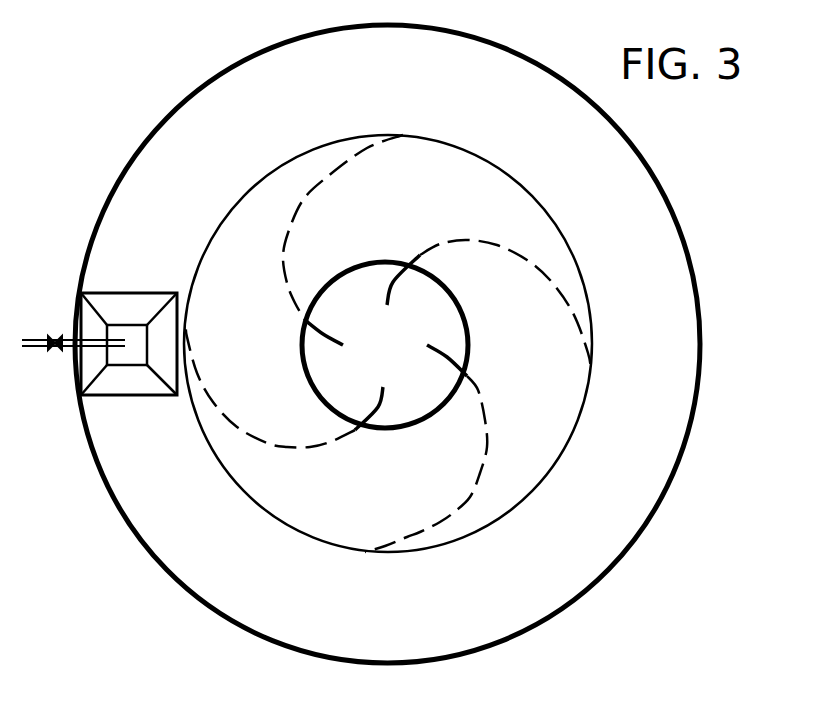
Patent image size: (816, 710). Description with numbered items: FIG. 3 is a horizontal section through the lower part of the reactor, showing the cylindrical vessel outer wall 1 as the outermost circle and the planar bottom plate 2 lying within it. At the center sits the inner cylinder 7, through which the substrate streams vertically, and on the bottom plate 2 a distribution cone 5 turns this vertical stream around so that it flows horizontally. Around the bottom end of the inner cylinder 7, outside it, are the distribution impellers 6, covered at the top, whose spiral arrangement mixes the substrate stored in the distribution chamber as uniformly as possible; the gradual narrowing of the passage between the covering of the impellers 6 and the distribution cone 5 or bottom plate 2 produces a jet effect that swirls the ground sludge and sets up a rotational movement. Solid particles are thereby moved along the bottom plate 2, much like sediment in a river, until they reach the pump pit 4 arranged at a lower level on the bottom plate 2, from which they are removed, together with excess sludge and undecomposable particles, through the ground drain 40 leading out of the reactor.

The cylindrical vessel outer wall 1 is at (100, 222).
The planar bottom plate 2 is at (388, 336).
The pump pit 4 is at (129, 344).
The distribution cone 5 is at (385, 345).
The distribution impellers 6 is at (288, 233).
The inner cylinder 7 is at (470, 347).
The ground drain 40 is at (73, 331).